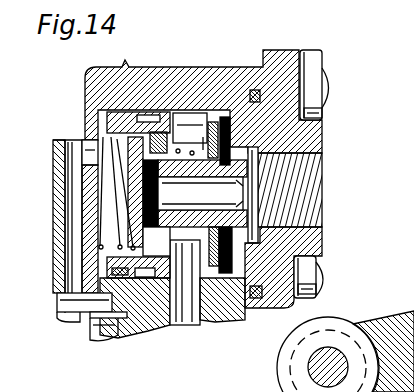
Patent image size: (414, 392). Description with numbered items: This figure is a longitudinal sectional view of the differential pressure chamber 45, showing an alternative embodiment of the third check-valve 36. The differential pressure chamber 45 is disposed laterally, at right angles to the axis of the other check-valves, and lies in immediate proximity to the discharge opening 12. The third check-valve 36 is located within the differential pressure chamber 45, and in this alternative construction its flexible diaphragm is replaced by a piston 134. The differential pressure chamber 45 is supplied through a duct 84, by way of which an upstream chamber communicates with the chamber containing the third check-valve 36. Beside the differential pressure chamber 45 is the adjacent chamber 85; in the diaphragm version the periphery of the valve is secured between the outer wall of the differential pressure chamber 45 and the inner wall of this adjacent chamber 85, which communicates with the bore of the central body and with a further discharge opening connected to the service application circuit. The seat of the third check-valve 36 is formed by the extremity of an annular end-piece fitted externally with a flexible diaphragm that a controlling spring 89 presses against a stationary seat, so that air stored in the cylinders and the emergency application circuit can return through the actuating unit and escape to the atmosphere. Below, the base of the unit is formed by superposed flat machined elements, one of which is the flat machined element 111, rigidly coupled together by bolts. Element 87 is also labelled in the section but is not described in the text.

The discharge opening 12 is at (310, 193).
The third check-valve 36 is at (162, 198).
The differential pressure chamber 45 is at (188, 122).
The duct 84 is at (190, 307).
The adjacent chamber 85 is at (100, 268).
The piston wall 87 is at (210, 172).
The controlling spring 89 is at (100, 208).
The flat machined element 111 is at (145, 311).
The piston 134 is at (148, 128).